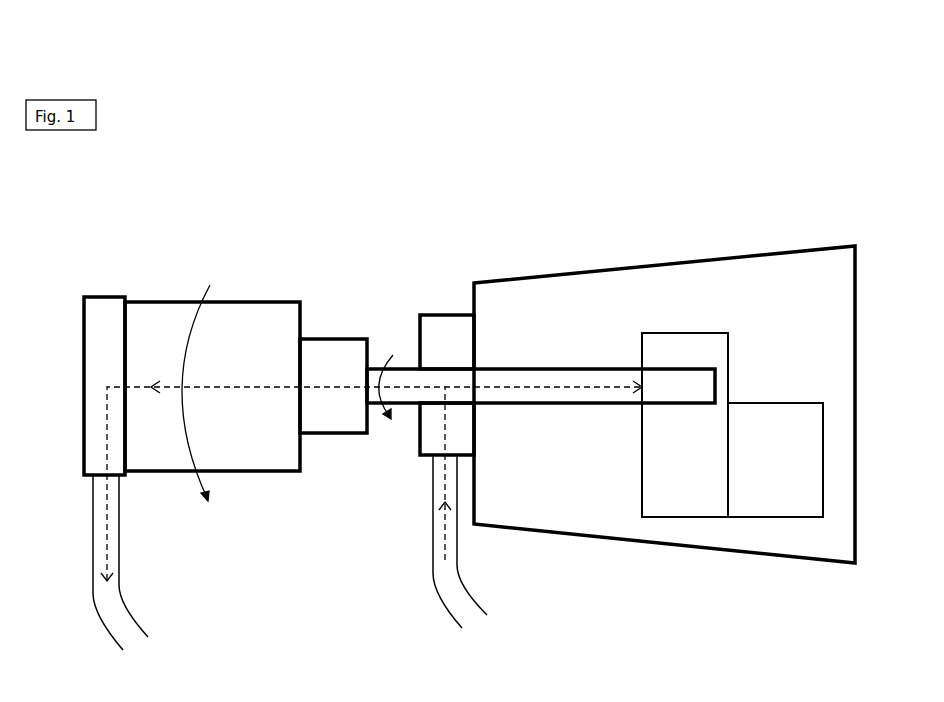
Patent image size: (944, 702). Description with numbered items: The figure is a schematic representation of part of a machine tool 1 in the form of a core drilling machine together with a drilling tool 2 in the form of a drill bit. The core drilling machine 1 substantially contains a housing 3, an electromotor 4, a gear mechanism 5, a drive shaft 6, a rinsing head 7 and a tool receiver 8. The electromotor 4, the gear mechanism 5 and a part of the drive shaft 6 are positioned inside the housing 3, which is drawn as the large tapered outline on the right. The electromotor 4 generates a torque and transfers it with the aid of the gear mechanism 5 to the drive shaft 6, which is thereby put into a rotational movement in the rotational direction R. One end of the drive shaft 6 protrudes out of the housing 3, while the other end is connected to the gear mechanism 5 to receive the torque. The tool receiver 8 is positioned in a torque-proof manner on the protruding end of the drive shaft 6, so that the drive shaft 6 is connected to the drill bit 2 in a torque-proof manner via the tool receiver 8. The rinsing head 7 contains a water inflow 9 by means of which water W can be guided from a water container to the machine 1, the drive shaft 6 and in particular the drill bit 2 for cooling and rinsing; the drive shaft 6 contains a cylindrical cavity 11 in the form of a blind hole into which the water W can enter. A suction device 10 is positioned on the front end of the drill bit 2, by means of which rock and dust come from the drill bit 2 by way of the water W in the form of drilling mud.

The machine tool 1 is at (611, 396).
The drilling tool 2 is at (228, 317).
The housing 3 is at (747, 276).
The electromotor 4 is at (758, 503).
The gear mechanism 5 is at (672, 500).
The drive shaft 6 is at (550, 377).
The rinsing head 7 is at (437, 333).
The tool receiver 8 is at (350, 350).
The water inflow 9 is at (442, 575).
The suction device 10 is at (98, 305).
The cylindrical cavity 11 is at (583, 393).
The rotational direction R is at (389, 396).
The water W is at (328, 387).